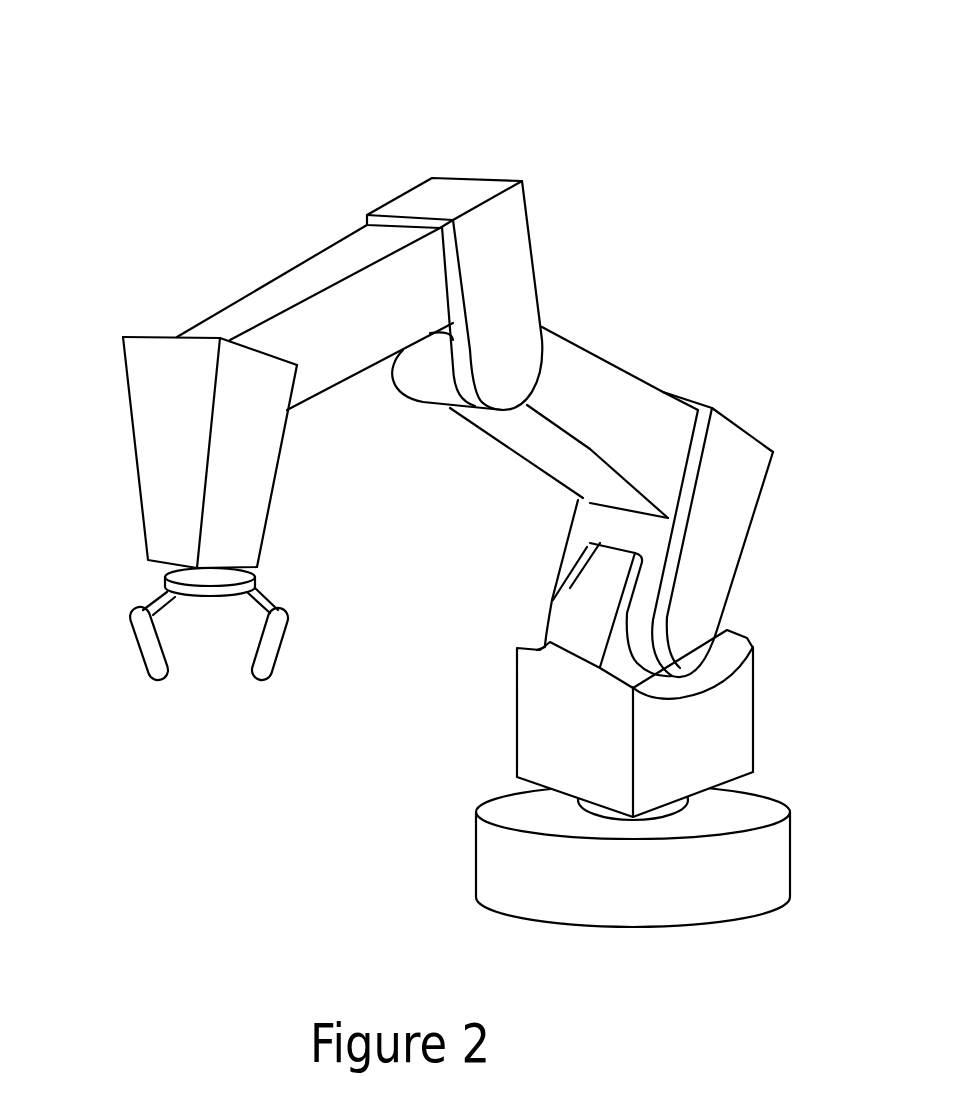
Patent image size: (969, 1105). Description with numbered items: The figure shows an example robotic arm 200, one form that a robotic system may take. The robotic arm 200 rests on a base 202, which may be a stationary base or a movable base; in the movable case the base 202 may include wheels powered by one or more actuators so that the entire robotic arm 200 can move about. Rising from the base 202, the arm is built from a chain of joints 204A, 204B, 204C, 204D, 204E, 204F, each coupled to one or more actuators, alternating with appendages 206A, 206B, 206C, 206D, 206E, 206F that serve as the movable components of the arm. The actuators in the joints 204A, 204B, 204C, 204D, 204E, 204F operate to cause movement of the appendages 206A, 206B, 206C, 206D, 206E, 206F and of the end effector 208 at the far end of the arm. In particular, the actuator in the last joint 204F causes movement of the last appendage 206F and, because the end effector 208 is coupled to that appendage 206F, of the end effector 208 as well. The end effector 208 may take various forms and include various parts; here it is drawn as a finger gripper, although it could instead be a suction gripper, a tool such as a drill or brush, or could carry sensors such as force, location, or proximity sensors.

The robotic arm 200 is at (463, 478).
The base 202 is at (763, 870).
The joint 204A is at (580, 803).
The joint 204B is at (713, 630).
The joint 204C is at (763, 487).
The joint 204D is at (505, 388).
The joint 204E is at (528, 212).
The joint 204F is at (177, 337).
The appendage 206A is at (737, 737).
The appendage 206B is at (737, 550).
The appendage 206C is at (643, 390).
The appendage 206D is at (513, 278).
The appendage 206E is at (305, 272).
The appendage 206F is at (237, 460).
The end effector 208 is at (275, 622).